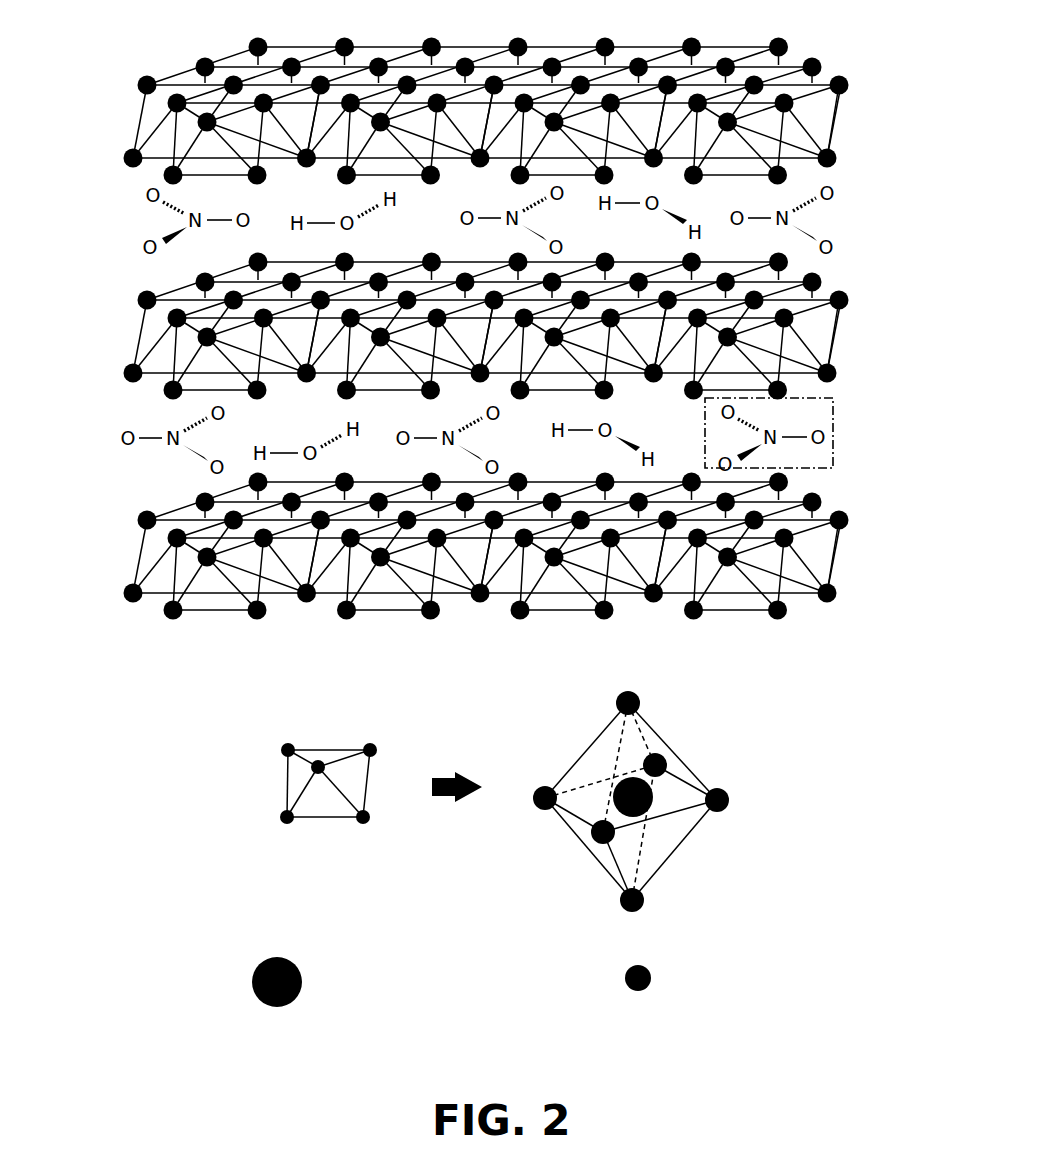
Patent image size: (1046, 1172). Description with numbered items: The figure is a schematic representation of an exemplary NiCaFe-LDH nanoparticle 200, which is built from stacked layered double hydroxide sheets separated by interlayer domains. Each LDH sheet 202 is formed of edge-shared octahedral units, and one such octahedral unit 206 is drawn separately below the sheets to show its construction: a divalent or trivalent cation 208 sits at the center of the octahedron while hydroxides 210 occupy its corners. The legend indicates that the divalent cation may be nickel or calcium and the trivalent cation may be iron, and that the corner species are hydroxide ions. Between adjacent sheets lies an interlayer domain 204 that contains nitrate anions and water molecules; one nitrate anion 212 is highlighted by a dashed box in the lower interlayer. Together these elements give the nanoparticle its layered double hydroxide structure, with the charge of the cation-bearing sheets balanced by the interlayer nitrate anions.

The NiCaFe-LDH nanoparticle 200 is at (124, 684).
The layered double hydroxide (LDH) sheet 202 is at (852, 43).
The interlayer domain 204 is at (850, 177).
The octahedral unit 206 is at (286, 777).
The divalent or trivalent cation 208 is at (226, 995).
The hydroxide 210 is at (613, 993).
The NO3- anion 212 is at (835, 430).